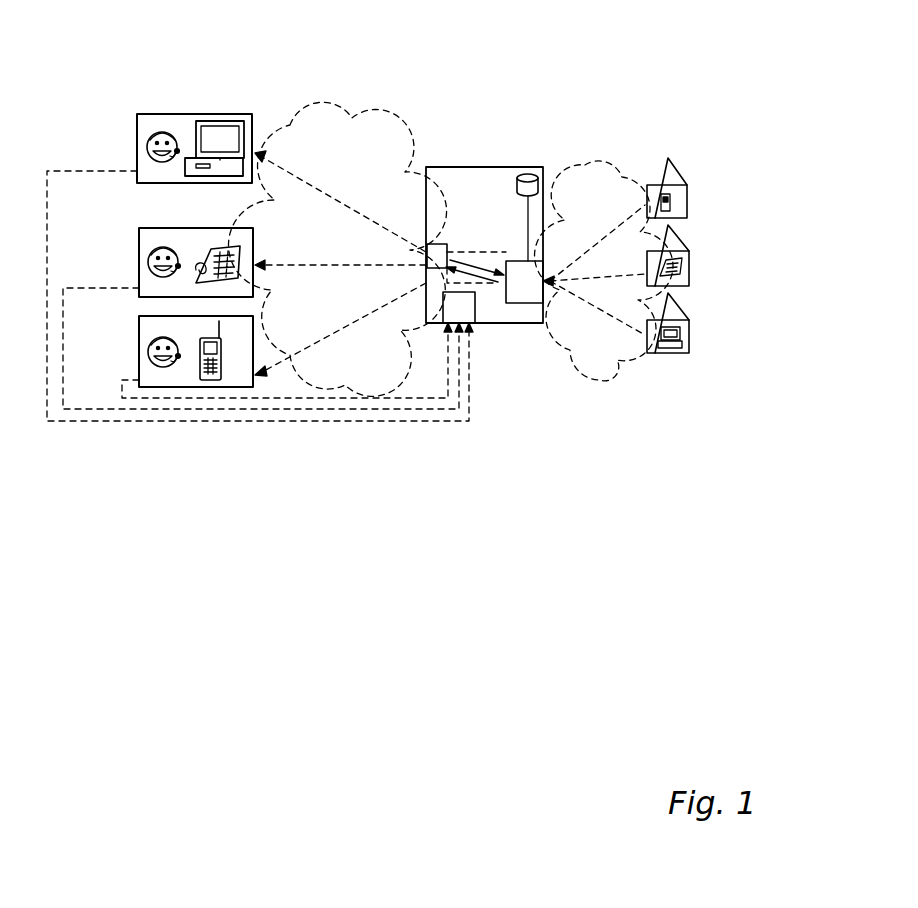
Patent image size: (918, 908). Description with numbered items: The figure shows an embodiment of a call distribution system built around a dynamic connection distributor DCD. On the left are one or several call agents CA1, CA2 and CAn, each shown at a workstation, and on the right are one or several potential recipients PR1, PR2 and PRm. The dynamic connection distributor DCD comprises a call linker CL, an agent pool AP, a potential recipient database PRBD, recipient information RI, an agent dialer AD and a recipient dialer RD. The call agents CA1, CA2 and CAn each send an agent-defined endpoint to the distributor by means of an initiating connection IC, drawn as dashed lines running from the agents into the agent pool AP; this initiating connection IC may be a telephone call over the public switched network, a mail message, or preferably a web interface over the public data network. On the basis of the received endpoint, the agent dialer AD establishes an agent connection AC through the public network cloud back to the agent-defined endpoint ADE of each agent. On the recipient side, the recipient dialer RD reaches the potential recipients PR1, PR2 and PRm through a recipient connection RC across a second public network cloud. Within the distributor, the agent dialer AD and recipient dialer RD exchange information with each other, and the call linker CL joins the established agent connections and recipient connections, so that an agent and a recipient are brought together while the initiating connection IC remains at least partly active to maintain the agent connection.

The call agent CA1 is at (137, 150).
The call agent CA2 is at (139, 262).
The call agent CAn is at (139, 358).
The initiating connection IC is at (206, 398).
The agent-defined endpoint ADE is at (263, 400).
The agent connection AC is at (385, 205).
The dynamic connection distributor DCD is at (466, 167).
The potential recipient database PRBD is at (532, 174).
The agent dialer AD is at (436, 240).
The recipient information RI is at (518, 224).
The call linker CL is at (474, 247).
The agent pool AP is at (443, 318).
The recipient dialer RD is at (521, 303).
The recipient connection RC is at (604, 314).
The potential recipient PR1 is at (689, 205).
The potential recipient PR2 is at (691, 270).
The potential recipient PRm is at (691, 337).